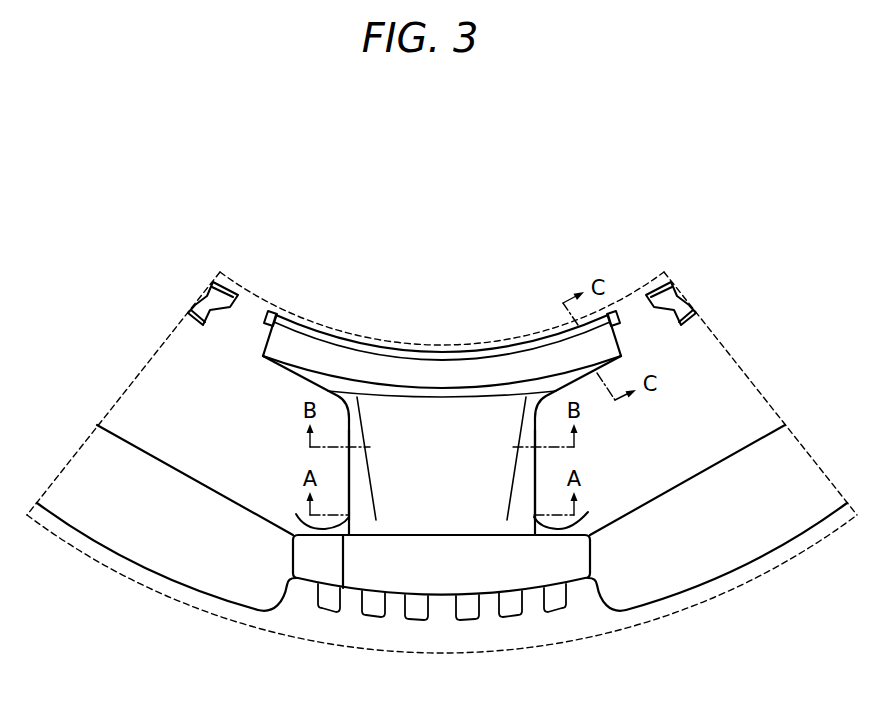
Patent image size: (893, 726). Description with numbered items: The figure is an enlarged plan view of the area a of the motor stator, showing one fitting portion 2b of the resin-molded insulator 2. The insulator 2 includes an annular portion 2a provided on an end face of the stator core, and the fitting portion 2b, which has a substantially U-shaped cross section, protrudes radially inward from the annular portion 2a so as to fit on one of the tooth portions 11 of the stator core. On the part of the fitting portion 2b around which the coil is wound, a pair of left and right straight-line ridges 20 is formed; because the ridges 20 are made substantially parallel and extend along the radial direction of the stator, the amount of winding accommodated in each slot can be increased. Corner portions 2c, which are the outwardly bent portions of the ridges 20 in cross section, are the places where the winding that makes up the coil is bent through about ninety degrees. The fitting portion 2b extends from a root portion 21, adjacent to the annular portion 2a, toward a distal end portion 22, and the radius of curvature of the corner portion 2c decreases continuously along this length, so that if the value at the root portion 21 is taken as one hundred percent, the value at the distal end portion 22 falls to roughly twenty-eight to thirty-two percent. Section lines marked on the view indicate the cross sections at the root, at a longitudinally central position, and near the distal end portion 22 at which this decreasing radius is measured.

The insulator 2 is at (668, 612).
The annular portion 2a is at (632, 582).
The fitting portion 2b is at (447, 417).
The corner portion 2c is at (349, 467).
The ridge 20 is at (459, 474).
The root portion 21 is at (296, 514).
The distal end portion 22 is at (288, 372).
The tooth portion 11 is at (500, 348).
The area a is at (362, 334).